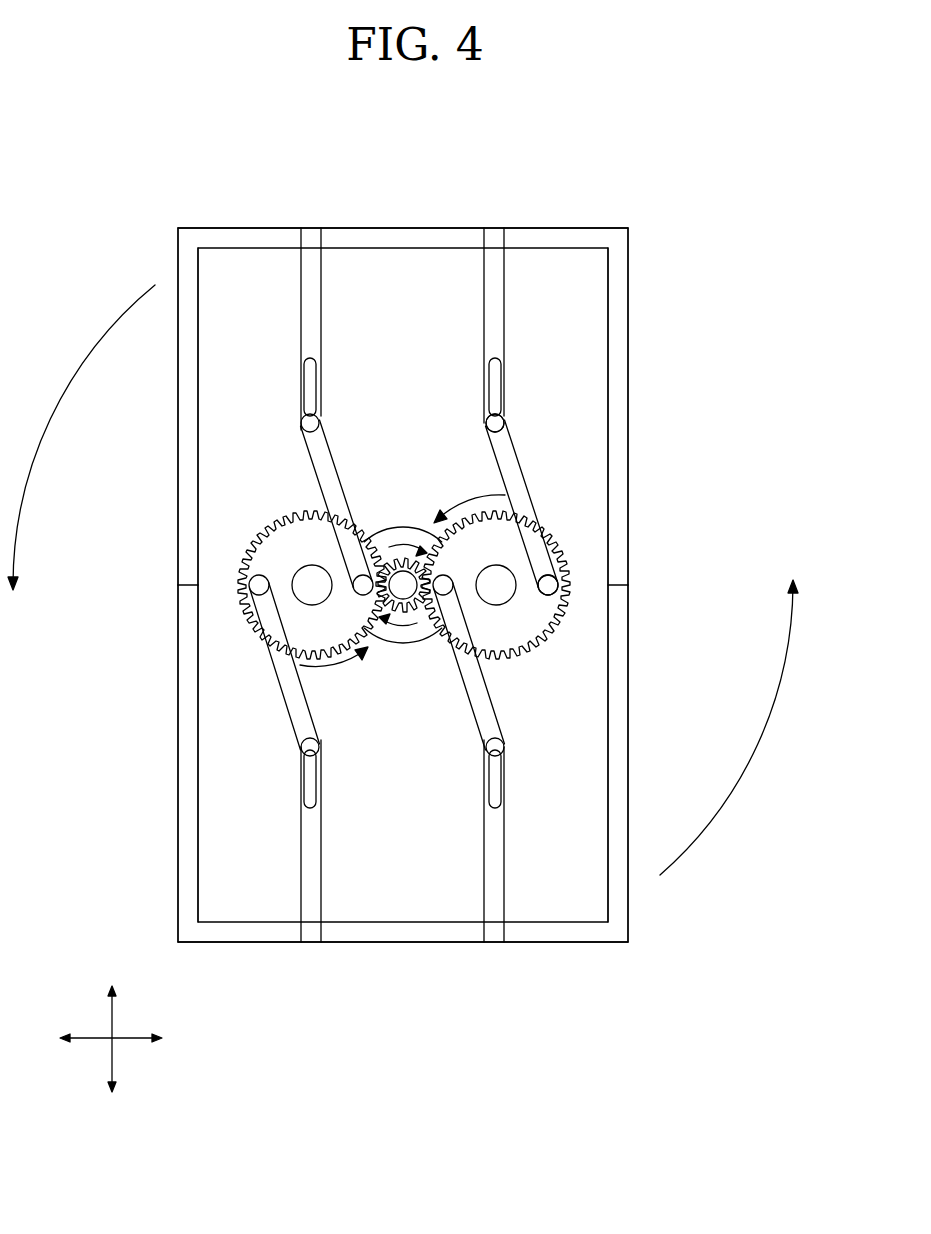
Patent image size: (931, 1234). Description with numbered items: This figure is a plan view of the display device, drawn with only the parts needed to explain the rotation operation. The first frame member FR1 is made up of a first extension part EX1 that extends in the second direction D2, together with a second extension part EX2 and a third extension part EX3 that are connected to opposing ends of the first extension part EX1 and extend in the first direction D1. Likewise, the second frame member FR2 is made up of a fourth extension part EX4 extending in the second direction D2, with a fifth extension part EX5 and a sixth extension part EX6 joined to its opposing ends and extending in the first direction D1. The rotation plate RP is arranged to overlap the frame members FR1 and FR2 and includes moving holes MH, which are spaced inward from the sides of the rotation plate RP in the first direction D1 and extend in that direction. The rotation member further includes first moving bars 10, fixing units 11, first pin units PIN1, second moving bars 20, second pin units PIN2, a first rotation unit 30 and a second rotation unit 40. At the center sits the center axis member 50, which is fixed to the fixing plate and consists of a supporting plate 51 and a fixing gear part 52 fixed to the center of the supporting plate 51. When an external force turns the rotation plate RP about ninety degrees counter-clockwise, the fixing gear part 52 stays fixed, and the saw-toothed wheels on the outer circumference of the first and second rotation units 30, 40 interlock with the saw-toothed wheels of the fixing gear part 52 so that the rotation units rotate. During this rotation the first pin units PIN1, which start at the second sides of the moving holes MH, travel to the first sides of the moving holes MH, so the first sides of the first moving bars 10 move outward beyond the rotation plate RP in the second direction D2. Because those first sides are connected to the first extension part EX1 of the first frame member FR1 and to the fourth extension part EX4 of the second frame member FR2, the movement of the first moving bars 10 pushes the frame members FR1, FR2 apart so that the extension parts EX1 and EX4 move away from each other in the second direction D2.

The first moving bar 10 is at (498, 284).
The fixing unit 11 is at (494, 232).
The second moving bar 20 is at (512, 466).
The first rotation unit 30 is at (268, 536).
The second rotation unit 40 is at (540, 640).
The center axis member 50 is at (403, 636).
The supporting plate 51 is at (413, 645).
The fixing gear part 52 is at (436, 704).
The rotation plate RP is at (598, 340).
The moving hole MH is at (490, 385).
The first pin unit PIN1 is at (500, 412).
The second pin unit PIN2 is at (546, 547).
The first extension part EX1 is at (404, 936).
The second extension part EX2 is at (185, 682).
The third extension part EX3 is at (622, 682).
The fourth extension part EX4 is at (390, 230).
The fifth extension part EX5 is at (185, 465).
The sixth extension part EX6 is at (622, 466).
The first frame member FR1 is at (176, 762).
The second frame member FR2 is at (176, 410).
The first direction D1 is at (114, 1026).
The second direction D2 is at (127, 1039).